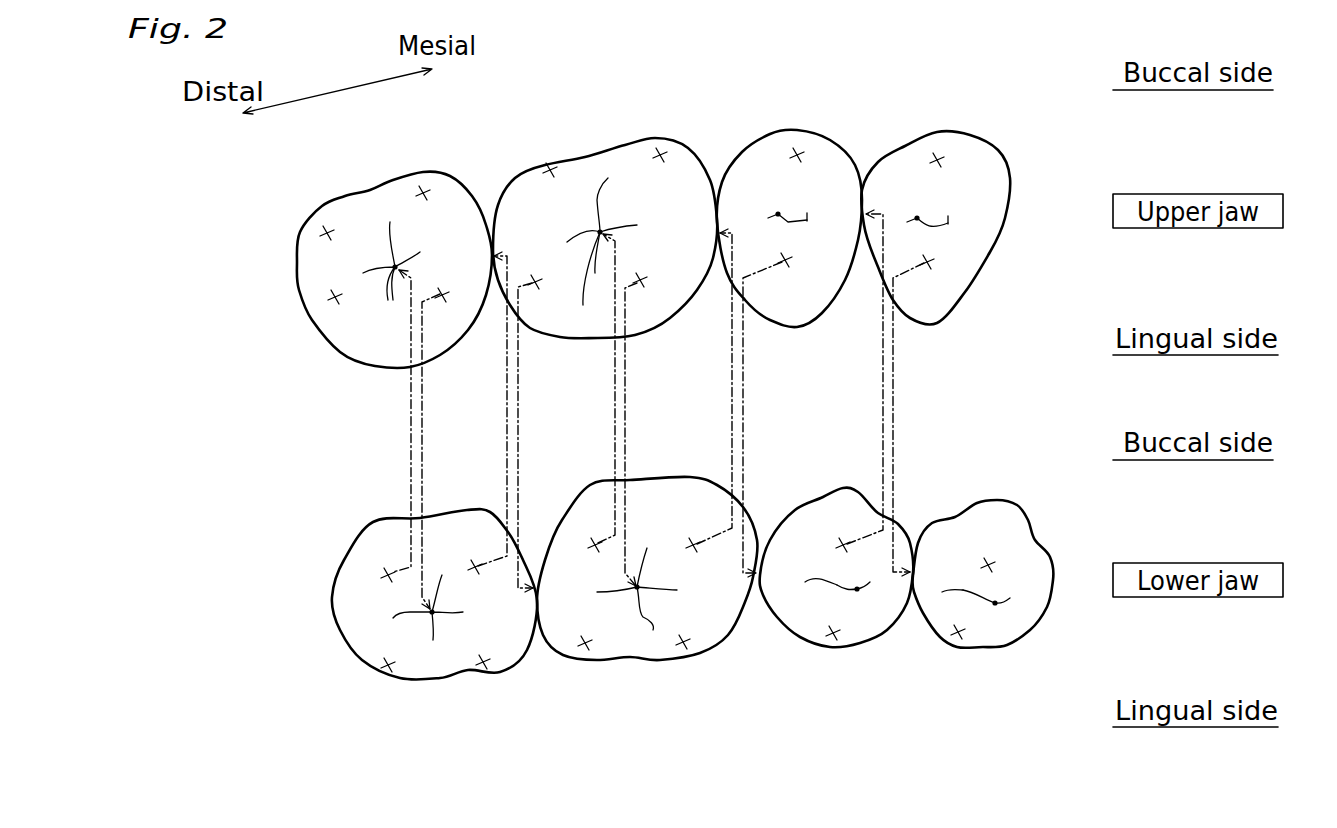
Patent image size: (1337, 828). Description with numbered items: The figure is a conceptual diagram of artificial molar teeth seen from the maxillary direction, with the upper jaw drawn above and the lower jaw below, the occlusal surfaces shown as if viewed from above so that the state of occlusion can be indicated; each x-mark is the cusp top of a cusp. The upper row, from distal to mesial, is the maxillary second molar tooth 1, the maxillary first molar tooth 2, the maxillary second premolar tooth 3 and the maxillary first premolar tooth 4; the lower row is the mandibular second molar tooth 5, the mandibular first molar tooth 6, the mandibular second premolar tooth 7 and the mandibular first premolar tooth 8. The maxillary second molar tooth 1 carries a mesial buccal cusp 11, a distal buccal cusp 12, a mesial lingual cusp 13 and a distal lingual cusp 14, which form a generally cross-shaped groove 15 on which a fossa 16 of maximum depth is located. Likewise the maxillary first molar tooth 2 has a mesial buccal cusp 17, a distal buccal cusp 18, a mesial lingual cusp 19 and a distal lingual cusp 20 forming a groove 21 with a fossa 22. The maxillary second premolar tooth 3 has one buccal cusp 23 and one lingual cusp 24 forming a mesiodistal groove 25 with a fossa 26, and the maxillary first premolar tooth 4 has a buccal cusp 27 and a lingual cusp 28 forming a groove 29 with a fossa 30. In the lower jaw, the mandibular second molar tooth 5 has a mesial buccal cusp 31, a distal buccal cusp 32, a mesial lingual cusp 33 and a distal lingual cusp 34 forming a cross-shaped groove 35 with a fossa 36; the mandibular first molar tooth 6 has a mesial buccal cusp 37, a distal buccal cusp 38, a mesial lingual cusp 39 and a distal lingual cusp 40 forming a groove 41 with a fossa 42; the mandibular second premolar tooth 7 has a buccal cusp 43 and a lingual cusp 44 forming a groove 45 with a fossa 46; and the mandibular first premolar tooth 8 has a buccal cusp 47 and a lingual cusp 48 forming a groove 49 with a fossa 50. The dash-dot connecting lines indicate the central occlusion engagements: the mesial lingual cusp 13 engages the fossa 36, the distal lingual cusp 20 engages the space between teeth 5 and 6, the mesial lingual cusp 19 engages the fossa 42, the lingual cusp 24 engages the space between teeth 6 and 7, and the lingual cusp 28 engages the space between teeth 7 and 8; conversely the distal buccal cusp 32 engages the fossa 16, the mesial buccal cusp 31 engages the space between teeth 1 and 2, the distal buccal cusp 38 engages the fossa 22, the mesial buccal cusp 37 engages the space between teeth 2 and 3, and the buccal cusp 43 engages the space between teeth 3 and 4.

The maxillary second molar tooth 1 is at (360, 343).
The maxillary first molar tooth 2 is at (548, 325).
The maxillary second premolar tooth 3 is at (765, 310).
The maxillary first premolar tooth 4 is at (938, 312).
The mandibular second molar tooth 5 is at (443, 520).
The mandibular first molar tooth 6 is at (650, 503).
The mandibular second premolar tooth 7 is at (847, 500).
The mandibular first premolar tooth 8 is at (997, 513).
The mesial buccal cusp 11 is at (423, 193).
The distal buccal cusp 12 is at (327, 233).
The mesial lingual cusp 13 is at (442, 300).
The distal lingual cusp 14 is at (335, 297).
The groove 15 is at (395, 267).
The fossa 16 is at (388, 300).
The mesial buccal cusp 17 is at (660, 155).
The distal buccal cusp 18 is at (550, 170).
The mesial lingual cusp 19 is at (640, 283).
The distal lingual cusp 20 is at (535, 282).
The groove 21 is at (597, 200).
The fossa 22 is at (583, 305).
The buccal cusp 23 is at (797, 155).
The lingual cusp 24 is at (785, 262).
The groove 25 is at (807, 220).
The fossa 26 is at (778, 214).
The buccal cusp 27 is at (937, 160).
The lingual cusp 28 is at (927, 262).
The groove 29 is at (948, 223).
The fossa 30 is at (917, 218).
The mesial buccal cusp 31 is at (477, 570).
The distal buccal cusp 32 is at (388, 572).
The mesial lingual cusp 33 is at (484, 668).
The distal lingual cusp 34 is at (388, 668).
The groove 35 is at (410, 612).
The fossa 36 is at (433, 640).
The mesial buccal cusp 37 is at (730, 637).
The distal buccal cusp 38 is at (595, 543).
The mesial lingual cusp 39 is at (683, 645).
The distal lingual cusp 40 is at (585, 647).
The groove 41 is at (653, 630).
The fossa 42 is at (637, 587).
The buccal cusp 43 is at (843, 545).
The lingual cusp 44 is at (835, 640).
The groove 45 is at (810, 583).
The fossa 46 is at (857, 589).
The buccal cusp 47 is at (990, 562).
The lingual cusp 48 is at (958, 635).
The groove 49 is at (942, 592).
The fossa 50 is at (995, 603).